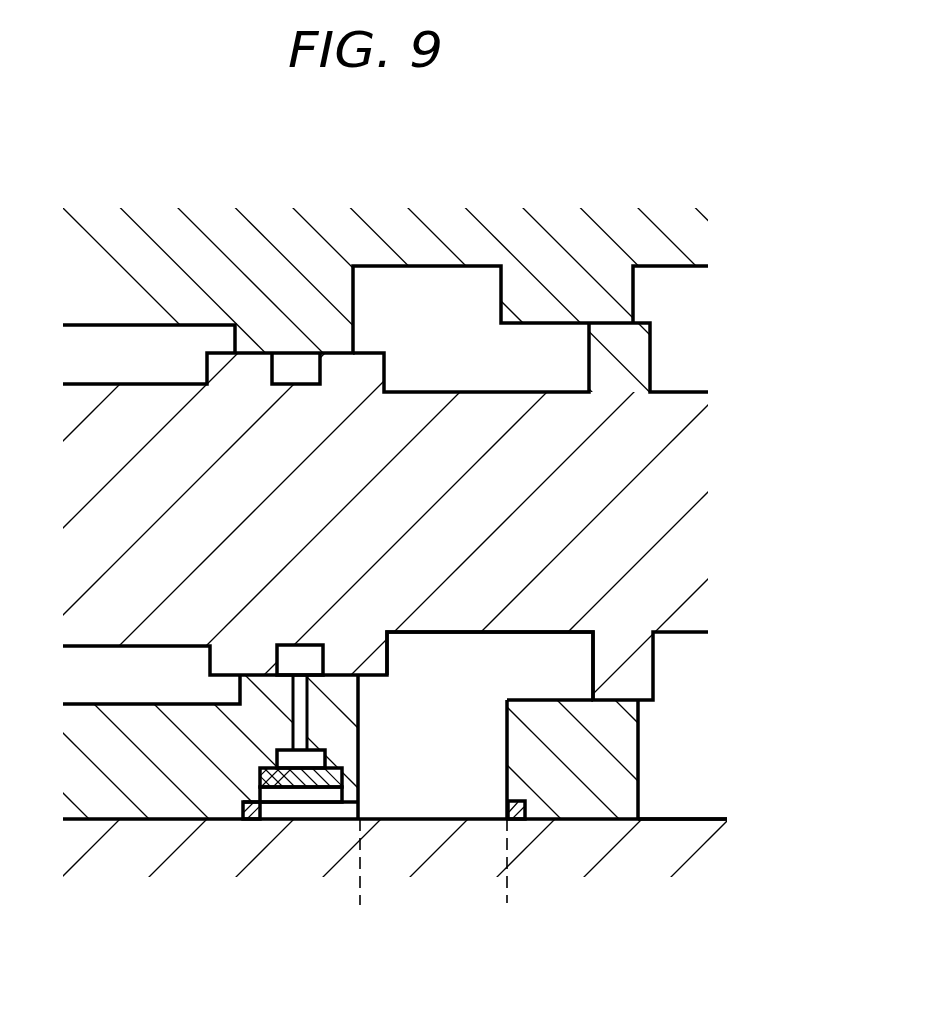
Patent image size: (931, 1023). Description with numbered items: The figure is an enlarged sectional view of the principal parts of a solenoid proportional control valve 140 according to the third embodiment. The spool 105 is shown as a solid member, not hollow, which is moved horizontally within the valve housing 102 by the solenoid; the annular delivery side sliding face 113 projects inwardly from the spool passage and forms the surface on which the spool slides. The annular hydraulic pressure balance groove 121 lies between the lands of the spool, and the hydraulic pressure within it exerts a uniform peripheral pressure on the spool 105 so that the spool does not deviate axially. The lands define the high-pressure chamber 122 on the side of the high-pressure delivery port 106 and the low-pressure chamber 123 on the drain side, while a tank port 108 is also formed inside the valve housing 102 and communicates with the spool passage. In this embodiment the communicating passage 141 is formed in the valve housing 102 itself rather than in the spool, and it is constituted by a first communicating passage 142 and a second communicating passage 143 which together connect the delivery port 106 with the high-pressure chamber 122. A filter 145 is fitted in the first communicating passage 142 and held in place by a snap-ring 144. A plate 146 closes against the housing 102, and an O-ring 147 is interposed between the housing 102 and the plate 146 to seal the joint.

The valve housing 102 is at (203, 255).
The spool 105 is at (647, 512).
The high-pressure delivery port 106 is at (506, 762).
The tank port 108 is at (640, 770).
The delivery side sliding face 113 is at (320, 674).
The hydraulic pressure balance groove 121 is at (293, 373).
The high-pressure chamber 122 is at (456, 328).
The low-pressure chamber 123 is at (144, 368).
The solenoid proportional control valve 140 is at (609, 203).
The communicating passage 141 is at (323, 935).
The first communicating passage 142 is at (312, 807).
The second communicating passage 143 is at (298, 703).
The snap-ring 144 is at (333, 785).
The filter 145 is at (327, 762).
The plate 146 is at (604, 843).
The O-ring 147 is at (514, 822).